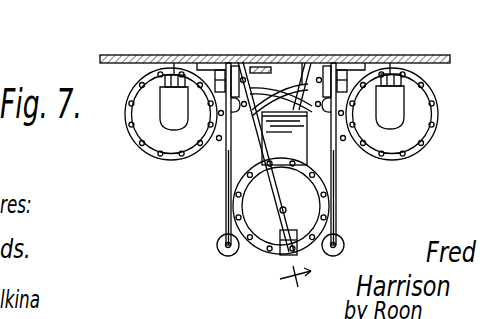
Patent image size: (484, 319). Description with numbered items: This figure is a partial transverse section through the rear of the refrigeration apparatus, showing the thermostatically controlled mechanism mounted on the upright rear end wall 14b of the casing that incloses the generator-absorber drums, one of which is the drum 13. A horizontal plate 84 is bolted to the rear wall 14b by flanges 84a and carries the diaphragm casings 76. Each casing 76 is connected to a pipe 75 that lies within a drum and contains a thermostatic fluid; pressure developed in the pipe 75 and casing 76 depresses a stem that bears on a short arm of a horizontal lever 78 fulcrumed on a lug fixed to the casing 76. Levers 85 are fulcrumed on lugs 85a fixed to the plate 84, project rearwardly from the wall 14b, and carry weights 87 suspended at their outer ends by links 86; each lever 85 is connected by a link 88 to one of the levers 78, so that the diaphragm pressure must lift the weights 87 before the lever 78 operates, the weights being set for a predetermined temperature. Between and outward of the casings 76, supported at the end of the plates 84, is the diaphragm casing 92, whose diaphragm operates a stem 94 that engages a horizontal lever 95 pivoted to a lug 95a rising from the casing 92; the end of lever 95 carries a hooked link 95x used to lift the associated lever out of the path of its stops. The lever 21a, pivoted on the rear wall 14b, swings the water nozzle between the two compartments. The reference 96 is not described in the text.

The drum 13 is at (292, 185).
The rear end wall 14b is at (128, 56).
The lever 21a is at (262, 66).
The pipe 75 is at (171, 62).
The diaphragm casing 76 is at (134, 88).
The horizontal lever 78 is at (309, 63).
The horizontal plate 84 is at (238, 148).
The flange 84a is at (197, 65).
The lever 85 is at (226, 193).
The lug 85a is at (234, 66).
The link 86 is at (218, 242).
The weight 87 is at (217, 248).
The link 88 is at (279, 118).
The diaphragm casing 92 is at (281, 206).
The stem 94 is at (280, 211).
The horizontal lever 95 is at (269, 157).
The lug 95a is at (295, 237).
The hooked link 95x is at (302, 63).
The body 96 is at (268, 134).